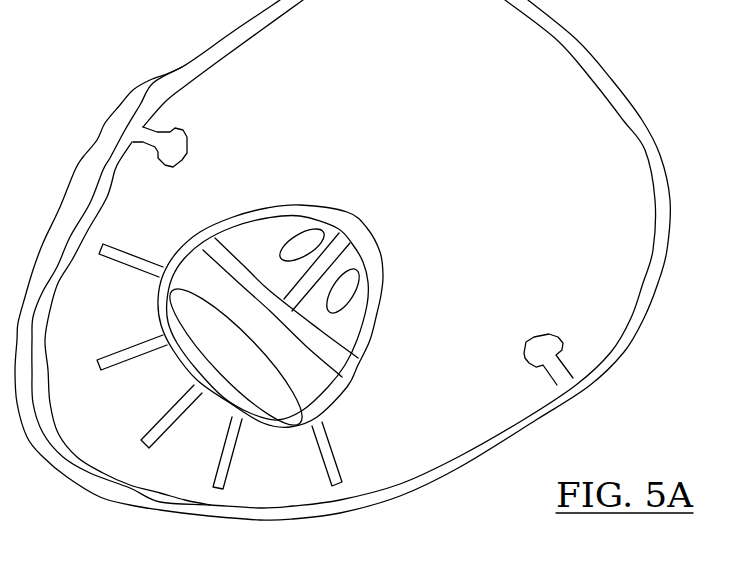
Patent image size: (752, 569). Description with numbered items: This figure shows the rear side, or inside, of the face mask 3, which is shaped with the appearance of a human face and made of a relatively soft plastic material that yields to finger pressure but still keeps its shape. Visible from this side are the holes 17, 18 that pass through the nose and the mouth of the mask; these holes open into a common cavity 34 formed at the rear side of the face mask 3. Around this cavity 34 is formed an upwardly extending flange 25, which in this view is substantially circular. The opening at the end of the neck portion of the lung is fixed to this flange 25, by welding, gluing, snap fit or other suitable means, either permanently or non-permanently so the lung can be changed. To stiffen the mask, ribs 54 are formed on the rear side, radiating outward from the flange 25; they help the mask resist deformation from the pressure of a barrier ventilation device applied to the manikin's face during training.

The face mask 3 is at (623, 158).
The nose holes 17 is at (347, 285).
The mouth hole 18 is at (268, 397).
The flange 25 is at (342, 398).
The common cavity 34 is at (318, 383).
The ribs 54 is at (218, 463).